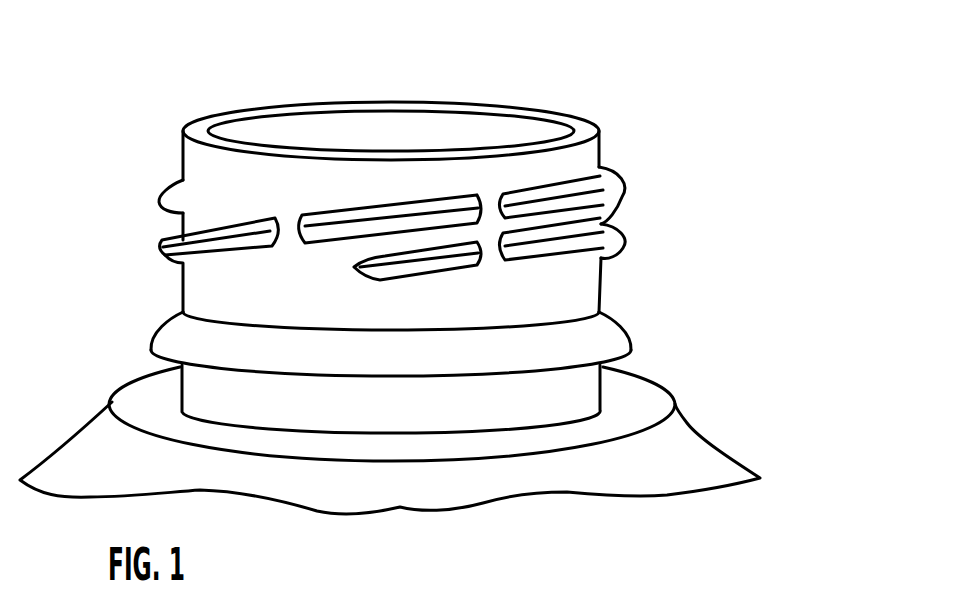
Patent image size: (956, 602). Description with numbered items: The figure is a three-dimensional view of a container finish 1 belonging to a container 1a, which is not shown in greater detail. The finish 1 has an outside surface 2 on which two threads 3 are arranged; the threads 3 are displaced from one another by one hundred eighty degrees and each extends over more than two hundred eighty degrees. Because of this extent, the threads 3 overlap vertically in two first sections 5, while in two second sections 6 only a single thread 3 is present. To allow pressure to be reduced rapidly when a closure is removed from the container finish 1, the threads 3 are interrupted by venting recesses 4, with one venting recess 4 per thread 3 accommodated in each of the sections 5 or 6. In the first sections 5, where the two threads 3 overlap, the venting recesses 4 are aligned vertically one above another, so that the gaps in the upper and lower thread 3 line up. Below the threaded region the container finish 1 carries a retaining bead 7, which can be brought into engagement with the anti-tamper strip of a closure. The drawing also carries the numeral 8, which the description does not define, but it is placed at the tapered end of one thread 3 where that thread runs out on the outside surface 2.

The container finish 1 is at (148, 138).
The container 1a is at (390, 440).
The outside surface 2 is at (557, 282).
The threads 3 is at (553, 202).
The venting recesses 4 is at (288, 228).
The first sections 5 is at (427, 237).
The second sections 6 is at (220, 275).
The retaining bead 7 is at (600, 337).
The tapered thread end 8 is at (355, 267).